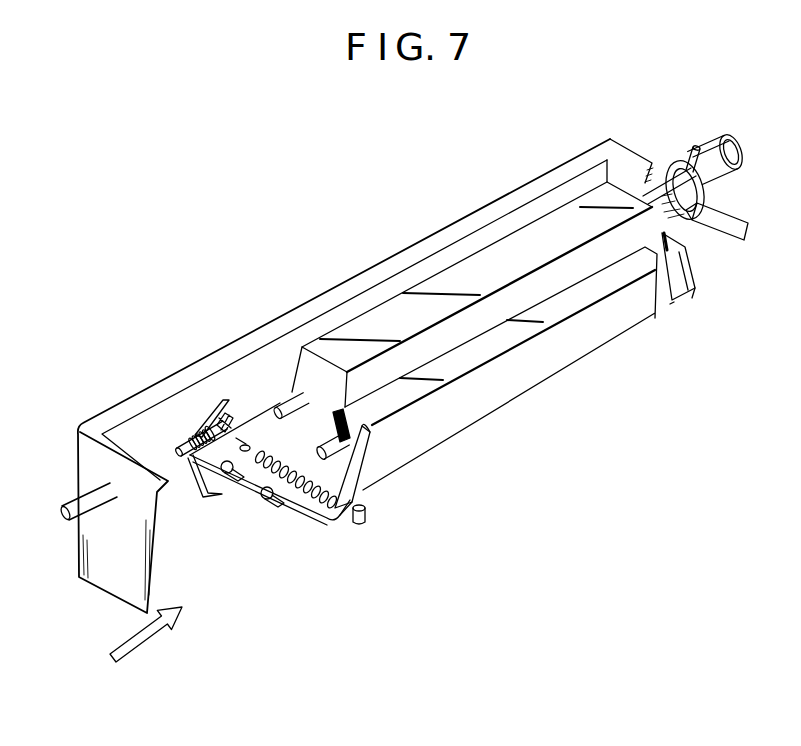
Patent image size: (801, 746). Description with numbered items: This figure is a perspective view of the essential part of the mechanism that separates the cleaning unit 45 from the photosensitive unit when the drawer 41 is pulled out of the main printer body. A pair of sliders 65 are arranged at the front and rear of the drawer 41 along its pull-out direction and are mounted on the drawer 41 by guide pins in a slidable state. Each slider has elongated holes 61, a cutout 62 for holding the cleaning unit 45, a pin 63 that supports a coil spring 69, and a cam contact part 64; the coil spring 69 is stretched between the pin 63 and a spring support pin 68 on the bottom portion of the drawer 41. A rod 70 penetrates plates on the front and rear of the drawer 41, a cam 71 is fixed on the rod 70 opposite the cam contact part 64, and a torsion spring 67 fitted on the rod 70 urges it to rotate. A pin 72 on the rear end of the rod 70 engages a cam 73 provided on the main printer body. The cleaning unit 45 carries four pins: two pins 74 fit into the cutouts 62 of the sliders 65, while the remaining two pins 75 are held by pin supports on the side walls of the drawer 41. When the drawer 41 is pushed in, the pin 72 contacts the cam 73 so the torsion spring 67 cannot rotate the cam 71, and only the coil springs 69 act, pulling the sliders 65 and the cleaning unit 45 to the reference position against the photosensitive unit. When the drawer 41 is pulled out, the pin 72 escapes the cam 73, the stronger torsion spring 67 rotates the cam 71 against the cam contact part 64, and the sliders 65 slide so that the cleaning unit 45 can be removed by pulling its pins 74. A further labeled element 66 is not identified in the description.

The drawer 41 is at (463, 217).
The cleaning unit 45 is at (368, 317).
The elongated holes 61 is at (290, 500).
The cutout 62 is at (367, 463).
The pin 63 is at (250, 440).
The cam contact part 64 is at (215, 405).
The sliders 65 is at (317, 517).
The spring 66 is at (263, 500).
The torsion spring 67 is at (207, 490).
The spring support pin 68 is at (369, 527).
The coil spring 69 is at (334, 514).
The rod 70 is at (182, 452).
The cam 71 is at (198, 411).
The pin 72 is at (670, 157).
The cam 73 is at (729, 140).
The pins 74 is at (323, 440).
The pins 75 is at (285, 393).